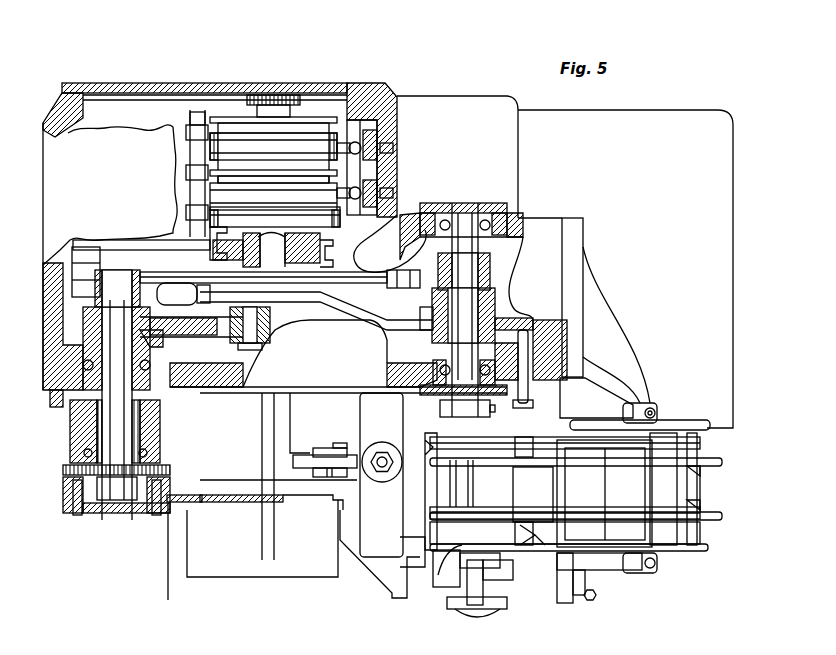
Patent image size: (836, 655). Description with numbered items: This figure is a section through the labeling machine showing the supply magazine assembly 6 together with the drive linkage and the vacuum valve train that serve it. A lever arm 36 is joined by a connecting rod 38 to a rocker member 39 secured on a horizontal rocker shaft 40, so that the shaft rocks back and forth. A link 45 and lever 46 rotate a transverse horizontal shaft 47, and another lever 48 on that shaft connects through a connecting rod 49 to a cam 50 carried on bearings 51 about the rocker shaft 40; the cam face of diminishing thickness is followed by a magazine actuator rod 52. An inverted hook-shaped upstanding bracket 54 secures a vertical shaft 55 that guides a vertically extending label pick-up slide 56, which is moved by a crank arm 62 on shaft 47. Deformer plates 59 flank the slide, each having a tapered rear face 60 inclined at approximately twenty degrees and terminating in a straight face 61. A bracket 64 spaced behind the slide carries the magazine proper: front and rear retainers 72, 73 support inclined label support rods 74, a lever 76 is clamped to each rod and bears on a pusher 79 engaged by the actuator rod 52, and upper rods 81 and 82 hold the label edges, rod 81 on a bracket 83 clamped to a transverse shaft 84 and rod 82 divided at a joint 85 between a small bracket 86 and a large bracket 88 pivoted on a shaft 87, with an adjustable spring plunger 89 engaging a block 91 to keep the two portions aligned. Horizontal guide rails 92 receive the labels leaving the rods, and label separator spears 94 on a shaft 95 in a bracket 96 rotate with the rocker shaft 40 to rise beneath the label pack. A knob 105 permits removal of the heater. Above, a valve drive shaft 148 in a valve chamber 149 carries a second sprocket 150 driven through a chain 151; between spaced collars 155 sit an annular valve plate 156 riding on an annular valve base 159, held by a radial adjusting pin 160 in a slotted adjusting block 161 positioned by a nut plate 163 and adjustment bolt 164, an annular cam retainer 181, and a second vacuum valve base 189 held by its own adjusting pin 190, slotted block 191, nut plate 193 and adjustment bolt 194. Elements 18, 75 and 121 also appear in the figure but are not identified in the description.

The supply magazine assembly 6 is at (735, 445).
The housing 18 is at (97, 303).
The lever arm 36 is at (73, 250).
The connecting rod 38 is at (374, 247).
The rocker member 39 is at (490, 265).
The horizontal rocker shaft 40 is at (470, 243).
The link 45 is at (258, 335).
The lever 46 is at (215, 335).
The transverse horizontal shaft 47 is at (92, 425).
The lever 48 is at (280, 279).
The connecting rod 49 is at (335, 312).
The cam 50 is at (525, 318).
The bearings 51 is at (463, 301).
The magazine actuator rod 52 is at (530, 398).
The inverted hook-shaped upstanding bracket 54 is at (385, 555).
The vertical shaft 55 is at (380, 455).
The label pick-up slide 56 is at (403, 497).
The deformer plates 59 is at (418, 567).
The rear wall or face 60 is at (435, 455).
The straight face 61 is at (415, 425).
The crank arm 62 is at (317, 500).
The bracket 64 is at (610, 305).
The front retainer 72 is at (553, 497).
The rear retainer 73 is at (678, 447).
The label support rods 74 is at (718, 510).
The clamp 75 is at (690, 478).
The lever 76 is at (520, 455).
The pusher 79 is at (518, 410).
The upper rod 81 is at (707, 428).
The upper rod 82 is at (710, 547).
The bracket 83 is at (612, 392).
The transverse shaft 84 is at (655, 408).
The joint 85 is at (533, 533).
The small bracket 86 is at (495, 580).
The shaft 87 is at (648, 570).
The large bracket 88 is at (598, 565).
The adjustable spring plunger 89 is at (596, 598).
The block 91 is at (560, 600).
The horizontal guide rails 92 is at (470, 447).
The label separator spear 94 is at (447, 569).
The shaft 95 is at (460, 492).
The bracket 96 is at (430, 402).
The knob 105 is at (495, 608).
The bearing 121 is at (292, 110).
The valve drive shaft 148 is at (300, 245).
The valve chamber 149 is at (355, 105).
The second sprocket 150 is at (240, 250).
The chain 151 is at (213, 258).
The spaced collars 155 is at (272, 95).
The annular valve plate 156 is at (215, 118).
The annular valve base 159 is at (213, 147).
The radial adjusting pin 160 is at (380, 92).
The horizontally slotted adjusting block 161 is at (395, 112).
The nut plate 163 is at (397, 128).
The adjustment bolt 164 is at (393, 146).
The annular cam retainer 181 is at (213, 175).
The second vacuum valve base 189 is at (213, 202).
The radial adjusting pin 190 is at (275, 181).
The horizontally slotted adjusting block 191 is at (375, 225).
The nut plate 193 is at (397, 172).
The adjustment bolt 194 is at (393, 191).